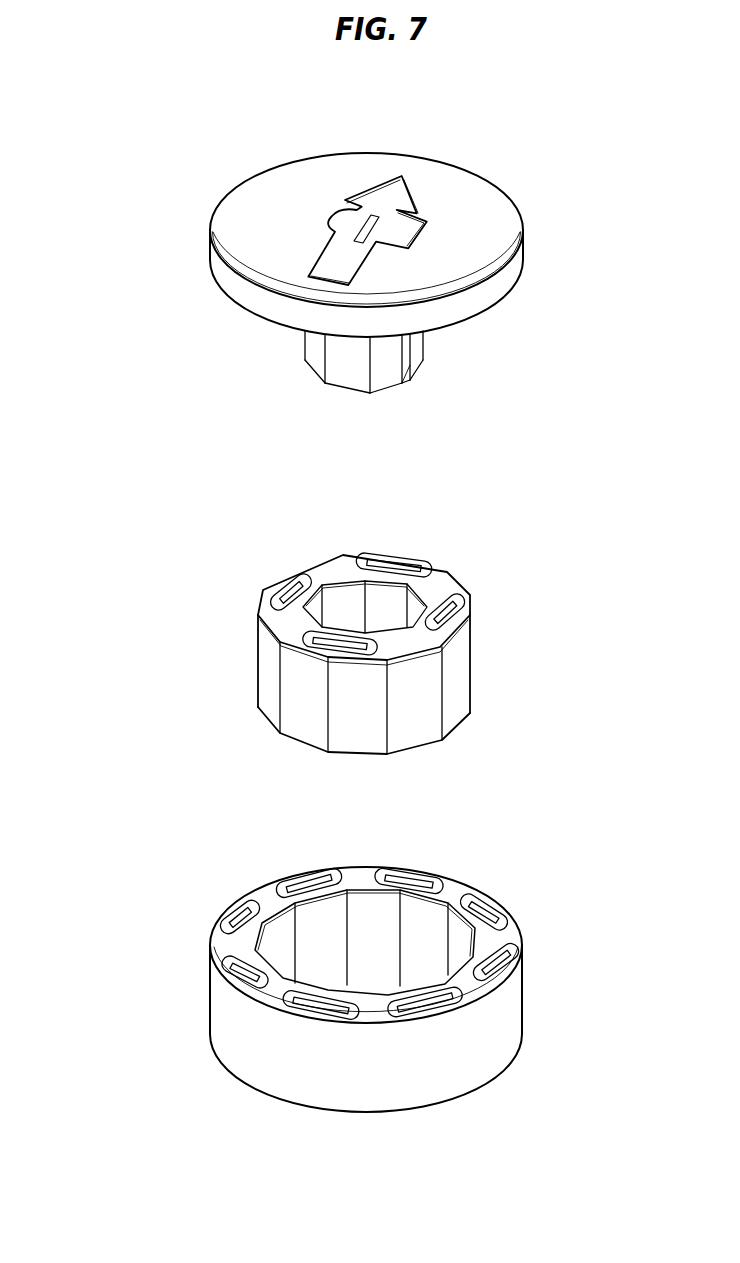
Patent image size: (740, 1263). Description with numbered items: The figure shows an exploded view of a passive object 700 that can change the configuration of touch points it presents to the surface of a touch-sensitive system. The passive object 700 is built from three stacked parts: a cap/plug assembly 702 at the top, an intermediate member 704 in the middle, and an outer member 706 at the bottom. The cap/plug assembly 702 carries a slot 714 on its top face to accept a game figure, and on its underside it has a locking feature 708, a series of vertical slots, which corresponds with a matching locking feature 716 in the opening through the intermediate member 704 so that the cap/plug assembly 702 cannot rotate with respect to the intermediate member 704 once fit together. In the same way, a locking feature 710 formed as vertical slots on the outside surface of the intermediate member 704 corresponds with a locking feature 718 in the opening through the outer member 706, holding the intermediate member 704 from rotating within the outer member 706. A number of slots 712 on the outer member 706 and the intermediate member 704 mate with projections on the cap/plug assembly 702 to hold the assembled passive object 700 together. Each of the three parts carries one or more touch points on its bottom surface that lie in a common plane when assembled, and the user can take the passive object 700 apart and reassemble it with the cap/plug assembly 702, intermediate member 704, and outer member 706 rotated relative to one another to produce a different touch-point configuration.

The passive object 700 is at (117, 148).
The cap/plug assembly 702 is at (552, 238).
The intermediate member 704 is at (502, 665).
The outer member 706 is at (543, 1000).
The locking feature 708 is at (420, 350).
The locking feature 710 is at (455, 707).
The slots 712 is at (457, 606).
The slot 714 is at (385, 212).
The locking feature 716 is at (350, 597).
The locking feature 718 is at (327, 925).